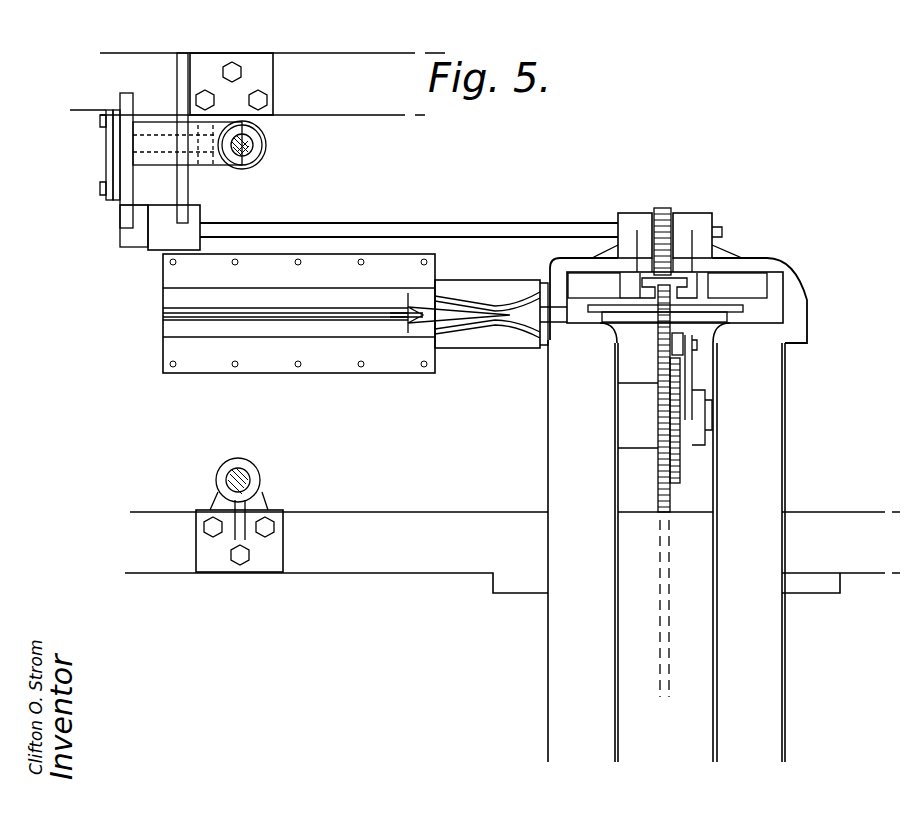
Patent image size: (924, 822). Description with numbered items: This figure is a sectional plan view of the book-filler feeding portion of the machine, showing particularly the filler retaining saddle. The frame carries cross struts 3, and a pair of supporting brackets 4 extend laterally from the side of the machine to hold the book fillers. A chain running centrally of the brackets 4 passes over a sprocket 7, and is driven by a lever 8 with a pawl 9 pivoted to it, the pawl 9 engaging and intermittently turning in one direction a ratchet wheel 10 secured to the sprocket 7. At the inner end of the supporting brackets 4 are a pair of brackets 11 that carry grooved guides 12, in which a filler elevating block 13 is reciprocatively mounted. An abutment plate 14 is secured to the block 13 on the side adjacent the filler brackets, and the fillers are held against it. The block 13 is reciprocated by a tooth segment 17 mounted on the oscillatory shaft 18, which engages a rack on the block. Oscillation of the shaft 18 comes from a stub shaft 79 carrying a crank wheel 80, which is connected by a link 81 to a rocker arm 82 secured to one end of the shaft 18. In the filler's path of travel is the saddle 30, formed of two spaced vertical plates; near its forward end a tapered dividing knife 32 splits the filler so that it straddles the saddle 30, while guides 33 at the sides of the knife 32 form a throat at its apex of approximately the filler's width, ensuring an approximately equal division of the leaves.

The cross struts 3 is at (340, 54).
The supporting brackets 4 is at (556, 465).
The sprocket 7 is at (658, 488).
The lever 8 is at (687, 378).
The pawl 9 is at (695, 349).
The ratchet wheel 10 is at (687, 476).
The brackets 11 is at (560, 248).
The grooved guides 12 is at (624, 287).
The filler elevating block 13 is at (662, 320).
The abutment plate 14 is at (745, 310).
The tooth segment 17 is at (674, 206).
The oscillatory shaft 18 is at (495, 222).
The saddle 30 is at (154, 318).
The tapered dividing knife 32 is at (450, 342).
The guides 33 is at (470, 294).
The stub shaft 79 is at (108, 144).
The crank wheel 80 is at (130, 92).
The link 81 is at (105, 158).
The rocker arm 82 is at (115, 212).